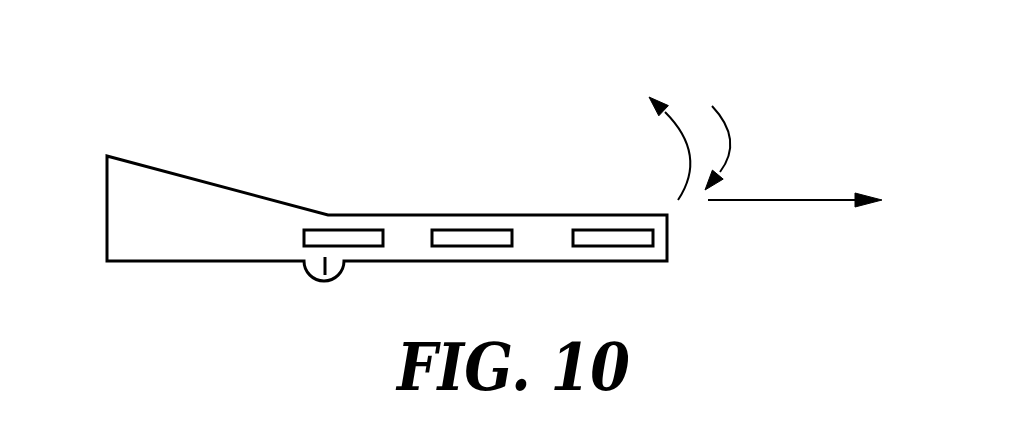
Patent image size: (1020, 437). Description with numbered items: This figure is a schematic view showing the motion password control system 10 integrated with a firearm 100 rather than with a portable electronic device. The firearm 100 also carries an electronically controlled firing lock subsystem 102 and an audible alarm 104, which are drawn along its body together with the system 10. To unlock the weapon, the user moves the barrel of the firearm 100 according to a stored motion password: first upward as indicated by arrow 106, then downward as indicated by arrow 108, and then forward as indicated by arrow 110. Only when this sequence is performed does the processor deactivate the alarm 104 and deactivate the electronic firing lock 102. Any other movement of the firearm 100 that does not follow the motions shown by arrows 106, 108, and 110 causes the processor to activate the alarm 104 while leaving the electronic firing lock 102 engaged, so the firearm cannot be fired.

The motion password control system 10 is at (607, 228).
The firearm 100 is at (177, 173).
The electronically controlled firing lock subsystem 102 is at (343, 230).
The audible alarm 104 is at (467, 228).
The arrow 106 is at (677, 120).
The arrow 108 is at (730, 133).
The arrow 110 is at (812, 202).